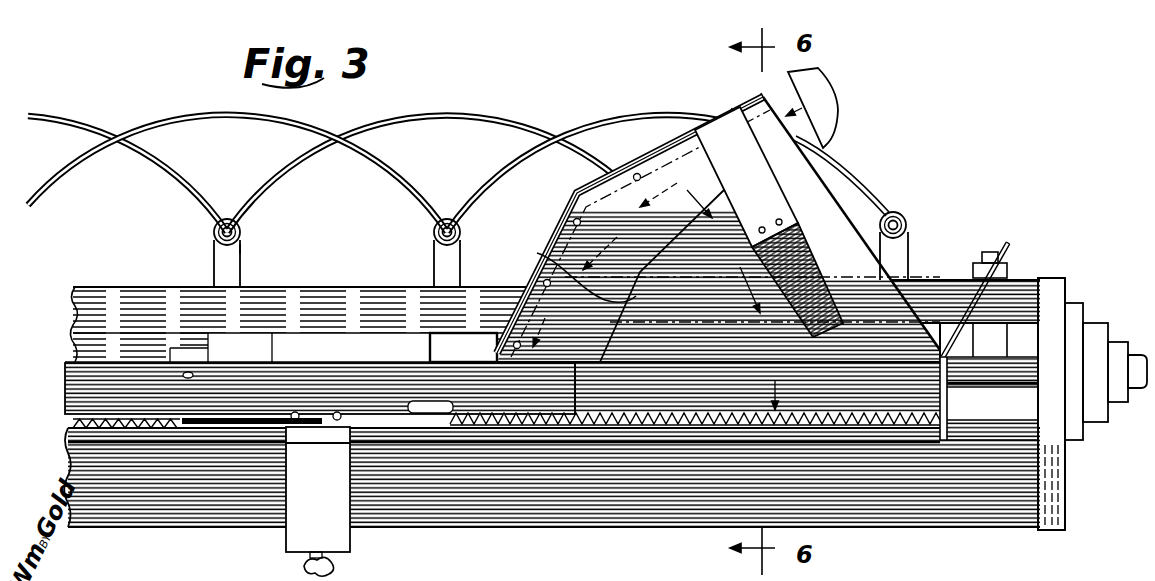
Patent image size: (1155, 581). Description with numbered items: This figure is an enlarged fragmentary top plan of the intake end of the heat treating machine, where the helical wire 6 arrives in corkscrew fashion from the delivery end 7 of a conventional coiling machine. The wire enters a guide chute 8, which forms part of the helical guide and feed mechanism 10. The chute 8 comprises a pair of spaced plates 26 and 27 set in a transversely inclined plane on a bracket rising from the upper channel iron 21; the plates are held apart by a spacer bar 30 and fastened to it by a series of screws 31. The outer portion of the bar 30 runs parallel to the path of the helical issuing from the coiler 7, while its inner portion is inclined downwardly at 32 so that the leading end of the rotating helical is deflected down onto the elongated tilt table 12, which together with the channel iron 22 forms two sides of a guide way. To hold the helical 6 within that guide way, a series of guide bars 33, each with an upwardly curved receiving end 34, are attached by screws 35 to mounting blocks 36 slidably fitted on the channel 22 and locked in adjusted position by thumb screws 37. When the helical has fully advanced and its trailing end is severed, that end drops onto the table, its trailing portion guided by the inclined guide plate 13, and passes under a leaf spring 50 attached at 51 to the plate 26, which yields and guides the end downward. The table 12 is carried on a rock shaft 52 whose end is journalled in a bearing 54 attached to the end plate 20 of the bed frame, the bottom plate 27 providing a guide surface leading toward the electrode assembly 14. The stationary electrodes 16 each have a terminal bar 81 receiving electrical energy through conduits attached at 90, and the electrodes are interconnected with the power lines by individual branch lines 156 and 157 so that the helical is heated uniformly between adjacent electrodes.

The helical wire 6 is at (636, 428).
The delivery end of coiling machine 7 is at (818, 92).
The guide chute 8 is at (673, 147).
The helical guide and feed mechanism 10 is at (498, 527).
The tilt table 12 is at (292, 365).
The inclined guide plate 13 is at (961, 285).
The electrode assembly 14 is at (246, 243).
The stationary electrodes 16 is at (228, 261).
The end plate 20 is at (1062, 500).
The upper channel iron 21 is at (130, 307).
The channel iron 22 is at (930, 487).
The chute plate 26 is at (757, 96).
The bottom chute plate 27 is at (866, 194).
The spacer bar 30 is at (648, 146).
The screws 31 is at (634, 173).
The downwardly inclined portion of spacer bar 32 is at (572, 272).
The guide bars 33 is at (392, 410).
The upwardly curved receiving end 34 is at (437, 400).
The screws 35 is at (331, 410).
The mounting block 36 is at (289, 538).
The thumb screws 37 is at (330, 566).
The leaf spring 50 is at (806, 250).
The leaf spring attachment 51 is at (806, 151).
The rock shaft 52 is at (990, 374).
The bearing 54 is at (1093, 338).
The terminal bar 81 is at (435, 253).
The conduit attachment 90 is at (214, 230).
The branch line 156 is at (50, 123).
The branch line 157 is at (207, 122).